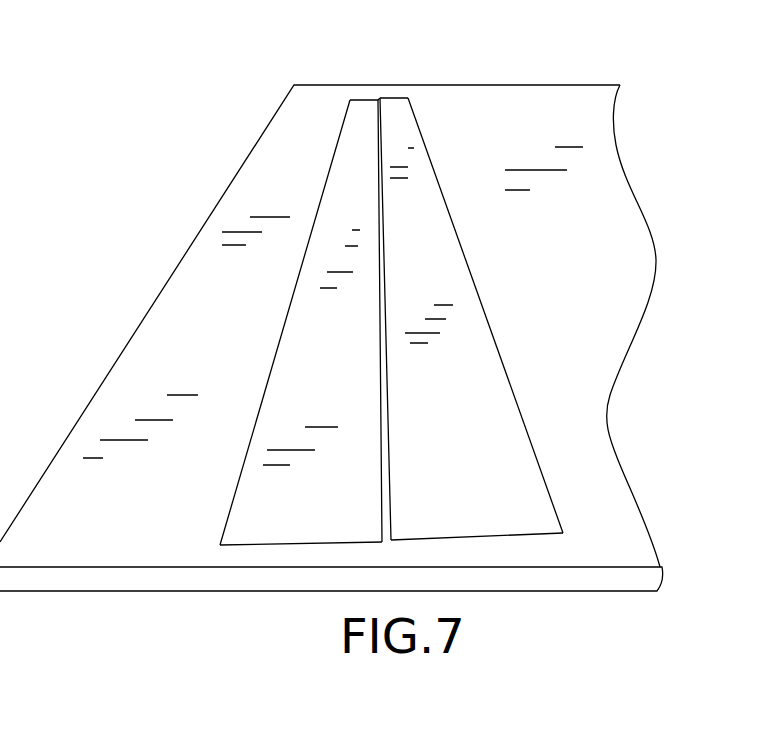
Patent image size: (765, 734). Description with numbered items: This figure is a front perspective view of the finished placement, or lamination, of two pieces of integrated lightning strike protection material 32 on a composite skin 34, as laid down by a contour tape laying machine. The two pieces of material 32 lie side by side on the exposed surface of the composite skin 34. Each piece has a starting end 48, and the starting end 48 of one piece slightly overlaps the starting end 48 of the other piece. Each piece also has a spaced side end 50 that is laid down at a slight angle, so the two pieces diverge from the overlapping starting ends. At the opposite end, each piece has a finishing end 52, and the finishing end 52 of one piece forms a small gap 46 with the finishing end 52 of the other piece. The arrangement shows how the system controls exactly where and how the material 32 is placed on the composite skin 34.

The integrated lightning strike protection material 32 is at (338, 192).
The composite skin 34 is at (175, 322).
The small gap 46 is at (387, 497).
The starting end 48 is at (392, 100).
The spaced side end 50 is at (268, 376).
The finishing end 52 is at (268, 545).